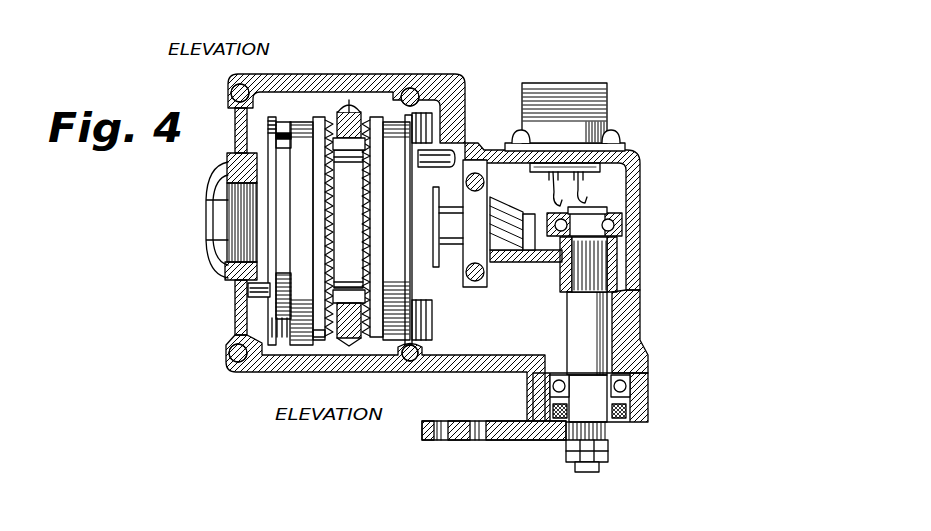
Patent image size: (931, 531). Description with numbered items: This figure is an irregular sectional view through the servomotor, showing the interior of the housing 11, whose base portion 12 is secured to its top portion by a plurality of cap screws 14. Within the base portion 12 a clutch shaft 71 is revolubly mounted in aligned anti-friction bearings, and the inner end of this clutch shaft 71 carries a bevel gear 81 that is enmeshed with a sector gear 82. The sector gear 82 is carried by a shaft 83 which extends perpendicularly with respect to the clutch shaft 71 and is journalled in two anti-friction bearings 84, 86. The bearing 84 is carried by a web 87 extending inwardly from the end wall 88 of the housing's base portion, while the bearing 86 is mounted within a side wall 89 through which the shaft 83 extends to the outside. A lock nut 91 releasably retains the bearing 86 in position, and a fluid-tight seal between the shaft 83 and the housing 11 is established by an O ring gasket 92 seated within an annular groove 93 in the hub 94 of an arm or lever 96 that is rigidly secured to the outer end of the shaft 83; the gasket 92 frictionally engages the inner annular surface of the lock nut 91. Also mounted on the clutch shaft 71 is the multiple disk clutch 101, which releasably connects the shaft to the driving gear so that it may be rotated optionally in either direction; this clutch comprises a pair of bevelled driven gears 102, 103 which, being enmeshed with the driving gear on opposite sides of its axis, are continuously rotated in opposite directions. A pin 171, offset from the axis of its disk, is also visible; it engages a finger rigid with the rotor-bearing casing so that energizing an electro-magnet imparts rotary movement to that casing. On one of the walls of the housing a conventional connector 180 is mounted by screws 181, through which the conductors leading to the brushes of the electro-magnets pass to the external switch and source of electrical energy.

The housing 11 is at (458, 75).
The base portion 12 is at (338, 112).
The cap screws 14 is at (232, 92).
The clutch shaft 71 is at (452, 240).
The bevel gear 81 is at (504, 252).
The sector gear 82 is at (536, 252).
The shaft 83 is at (588, 320).
The anti-friction bearing 84 is at (637, 207).
The anti-friction bearing 86 is at (614, 387).
The web 87 is at (548, 218).
The end wall 88 is at (632, 280).
The side wall 89 is at (474, 373).
The lock nut 91 is at (630, 410).
The O ring gasket 92 is at (618, 413).
The annular groove 93 is at (562, 410).
The hub 94 is at (604, 444).
The arm 96 is at (459, 441).
The multiple disk clutch 101 is at (365, 111).
The bevelled driven gear 102 is at (320, 340).
The bevelled driven gear 103 is at (351, 342).
The pin 171 is at (262, 299).
The connector 180 is at (565, 92).
The screws 181 is at (515, 133).